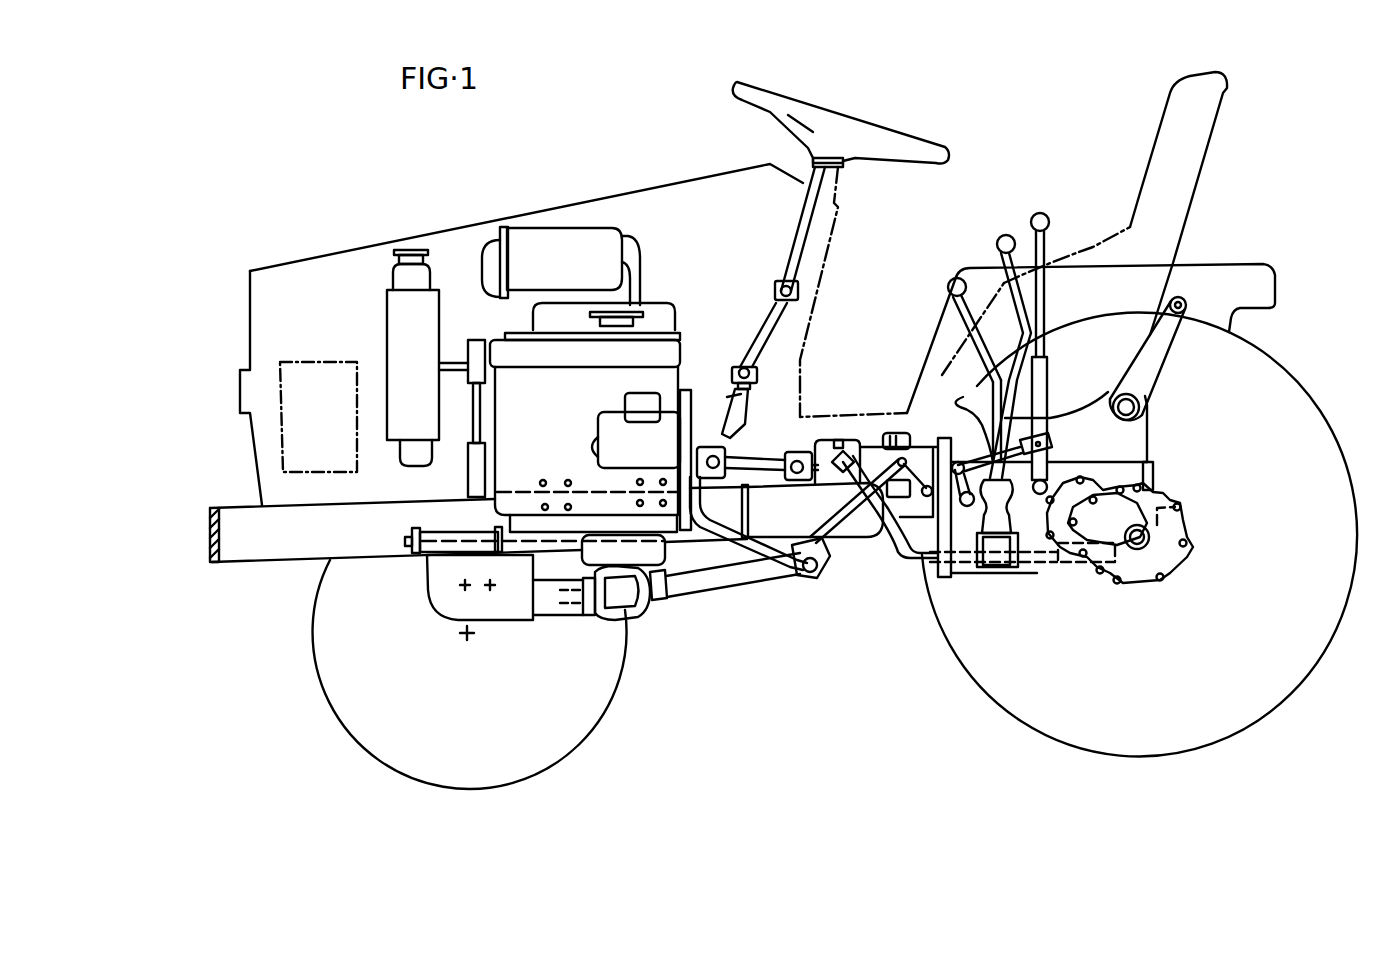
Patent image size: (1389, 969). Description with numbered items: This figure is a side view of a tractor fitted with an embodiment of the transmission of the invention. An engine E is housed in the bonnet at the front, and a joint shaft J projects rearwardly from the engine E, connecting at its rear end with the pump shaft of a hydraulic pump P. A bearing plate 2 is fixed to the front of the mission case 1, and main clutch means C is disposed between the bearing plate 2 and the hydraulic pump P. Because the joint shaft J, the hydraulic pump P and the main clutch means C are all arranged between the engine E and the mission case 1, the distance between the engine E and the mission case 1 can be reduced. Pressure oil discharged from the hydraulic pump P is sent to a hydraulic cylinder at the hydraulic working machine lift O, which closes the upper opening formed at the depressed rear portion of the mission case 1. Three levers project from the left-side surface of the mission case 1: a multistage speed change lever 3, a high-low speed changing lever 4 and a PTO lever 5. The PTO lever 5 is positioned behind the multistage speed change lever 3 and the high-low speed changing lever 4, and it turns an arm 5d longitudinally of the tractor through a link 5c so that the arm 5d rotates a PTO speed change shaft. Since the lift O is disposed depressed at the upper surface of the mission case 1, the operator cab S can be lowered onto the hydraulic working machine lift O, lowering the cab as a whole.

The mission case 1 is at (1040, 573).
The bearing plate 2 is at (945, 577).
The multistage speed change lever 3 is at (949, 284).
The high-low speed changing lever 4 is at (1002, 236).
The PTO lever 5 is at (1050, 224).
The link 5c is at (963, 399).
The arm 5d is at (952, 440).
The engine E is at (593, 466).
The joint shaft J is at (768, 465).
The hydraulic pump P is at (833, 438).
The main clutch means C is at (884, 433).
The hydraulic working machine lift O is at (1150, 441).
The operator cab S is at (1140, 193).